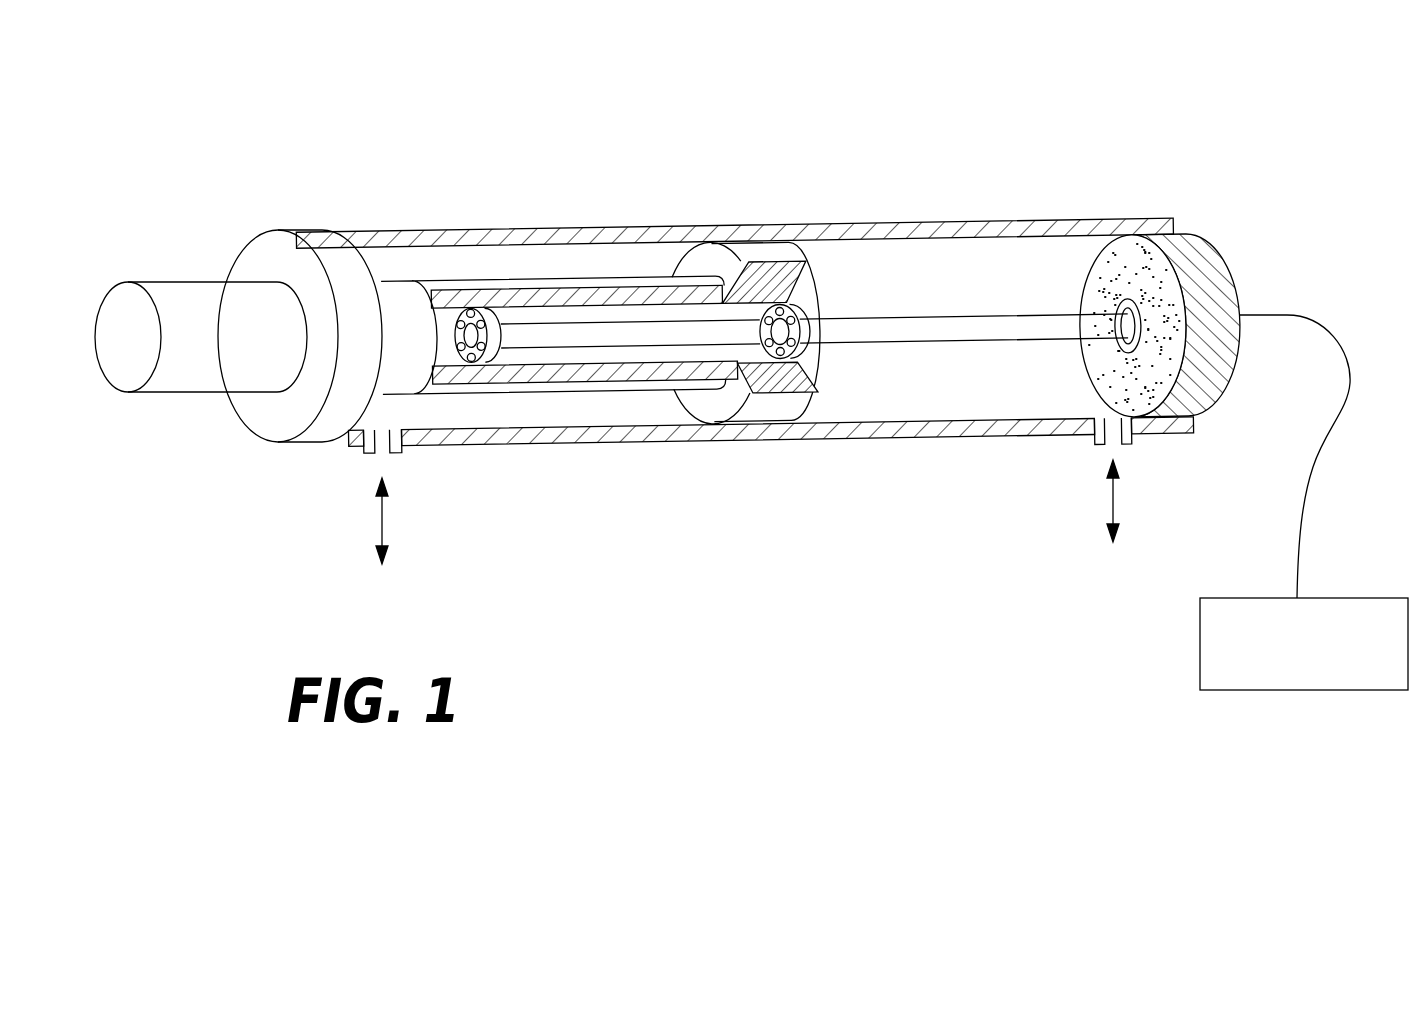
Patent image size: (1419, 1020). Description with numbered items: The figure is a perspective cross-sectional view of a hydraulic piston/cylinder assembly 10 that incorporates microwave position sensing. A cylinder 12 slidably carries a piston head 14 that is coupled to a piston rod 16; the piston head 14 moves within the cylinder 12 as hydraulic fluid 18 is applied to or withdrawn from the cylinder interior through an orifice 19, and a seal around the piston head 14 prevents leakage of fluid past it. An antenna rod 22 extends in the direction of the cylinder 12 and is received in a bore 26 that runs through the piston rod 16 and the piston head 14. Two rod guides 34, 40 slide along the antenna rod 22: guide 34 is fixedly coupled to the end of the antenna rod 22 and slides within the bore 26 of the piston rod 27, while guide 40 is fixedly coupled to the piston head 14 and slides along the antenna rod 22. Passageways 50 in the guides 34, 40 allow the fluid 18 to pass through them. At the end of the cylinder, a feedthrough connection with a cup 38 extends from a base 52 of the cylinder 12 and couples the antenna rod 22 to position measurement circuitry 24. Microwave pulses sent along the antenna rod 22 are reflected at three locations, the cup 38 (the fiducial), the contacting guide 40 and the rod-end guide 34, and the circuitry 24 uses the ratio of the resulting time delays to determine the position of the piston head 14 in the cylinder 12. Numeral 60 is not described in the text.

The hydraulic piston/cylinder assembly 10 is at (341, 147).
The cylinder 12 is at (1147, 181).
The piston head 14 is at (705, 410).
The piston rod 16 is at (180, 395).
The hydraulic fluid 18 is at (549, 268).
The orifice 19 is at (380, 450).
The antenna rod 22 is at (1020, 305).
The position measurement circuitry 24 is at (1198, 653).
The bore 26 is at (622, 312).
The piston rod 27 is at (655, 288).
The rod guide 34 is at (494, 351).
The feedthrough connection cup 38 is at (1108, 283).
The rod guide 40 is at (815, 375).
The passageways 50 is at (456, 322).
The base 52 is at (1230, 262).
The chamber 60 is at (955, 292).